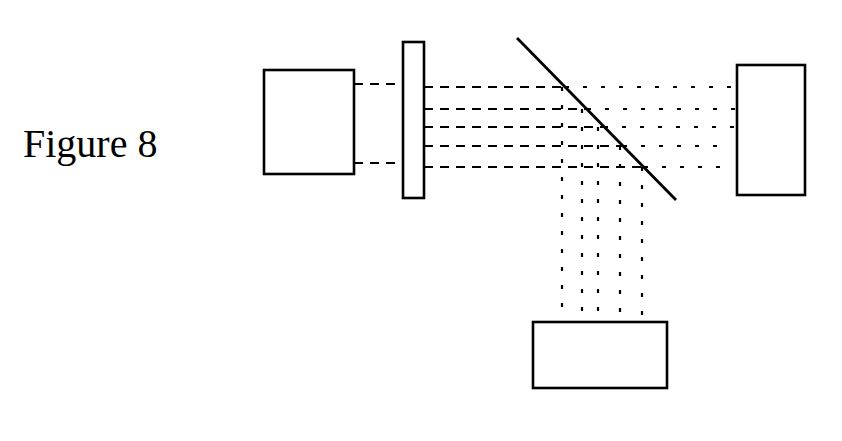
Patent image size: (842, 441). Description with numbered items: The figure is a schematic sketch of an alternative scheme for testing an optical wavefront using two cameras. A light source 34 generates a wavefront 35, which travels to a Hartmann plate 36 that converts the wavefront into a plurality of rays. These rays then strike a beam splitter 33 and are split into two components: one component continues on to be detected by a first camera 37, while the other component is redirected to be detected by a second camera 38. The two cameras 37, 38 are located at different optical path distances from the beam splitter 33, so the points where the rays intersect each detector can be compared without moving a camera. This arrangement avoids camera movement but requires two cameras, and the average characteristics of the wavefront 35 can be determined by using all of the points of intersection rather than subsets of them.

The beam splitter 33 is at (527, 50).
The light source 34 is at (313, 69).
The wavefront 35 is at (377, 82).
The Hartmann plate 36 is at (412, 198).
The first camera 37 is at (737, 66).
The second camera 38 is at (533, 358).